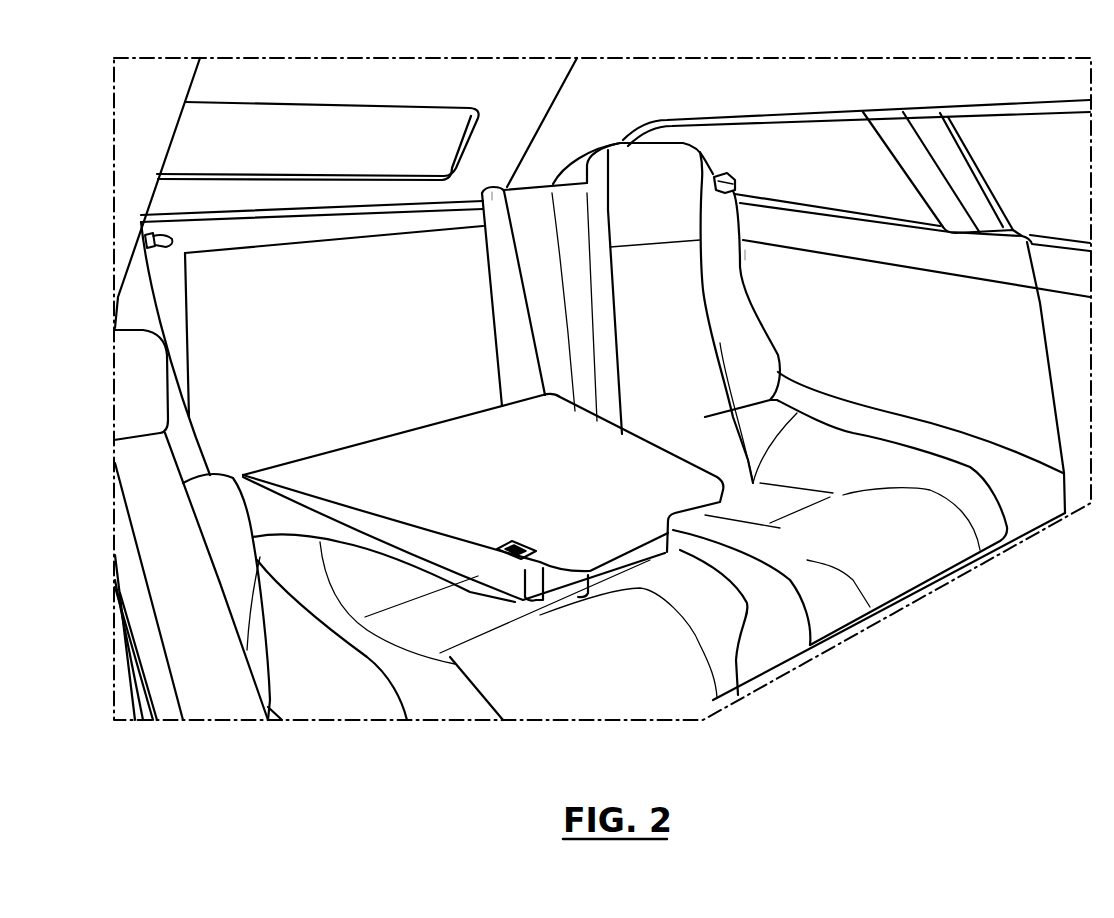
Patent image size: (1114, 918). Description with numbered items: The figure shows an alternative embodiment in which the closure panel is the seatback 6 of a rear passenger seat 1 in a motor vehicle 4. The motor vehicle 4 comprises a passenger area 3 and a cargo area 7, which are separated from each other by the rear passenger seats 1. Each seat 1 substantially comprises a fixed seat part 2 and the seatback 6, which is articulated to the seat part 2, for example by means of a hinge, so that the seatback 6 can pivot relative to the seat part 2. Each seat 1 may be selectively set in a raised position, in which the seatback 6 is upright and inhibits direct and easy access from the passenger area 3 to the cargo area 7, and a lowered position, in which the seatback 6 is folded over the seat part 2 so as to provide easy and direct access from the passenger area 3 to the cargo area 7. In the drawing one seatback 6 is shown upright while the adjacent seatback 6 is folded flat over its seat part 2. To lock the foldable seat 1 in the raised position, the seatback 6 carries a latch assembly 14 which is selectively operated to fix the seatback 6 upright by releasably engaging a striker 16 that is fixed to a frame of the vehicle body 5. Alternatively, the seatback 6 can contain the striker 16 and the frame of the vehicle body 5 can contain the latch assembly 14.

The rear passenger seat 1 is at (525, 427).
The seat part 2 is at (853, 453).
The passenger area 3 is at (922, 289).
The motor vehicle 4 is at (1047, 273).
The vehicle body 5 is at (200, 236).
The seatback 6 is at (466, 443).
The cargo area 7 is at (402, 279).
The latch assembly 14 is at (524, 540).
The striker 16 is at (164, 254).